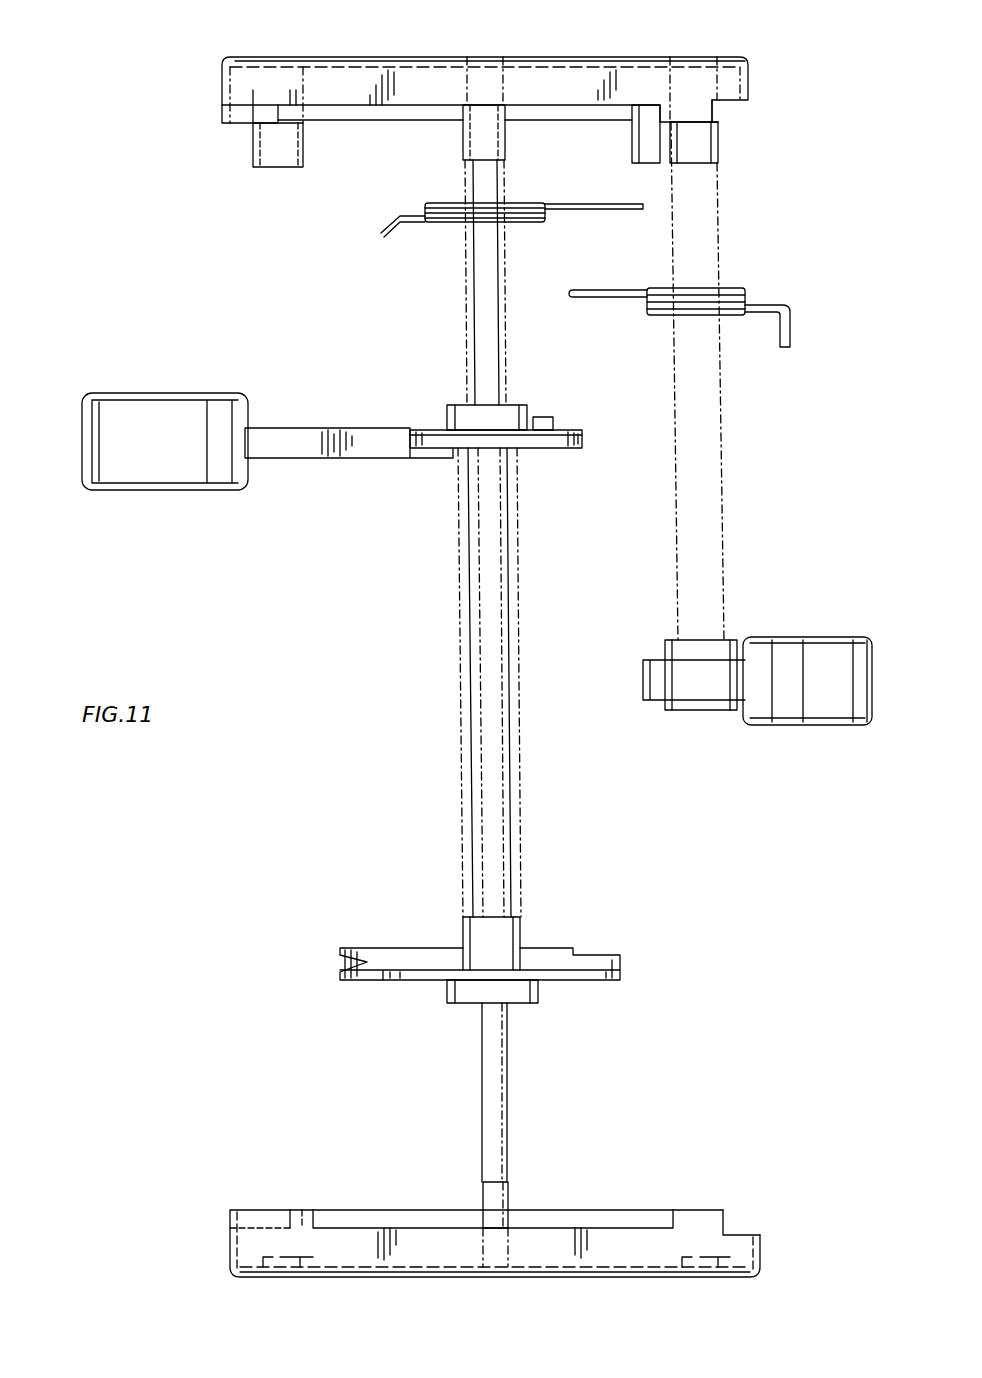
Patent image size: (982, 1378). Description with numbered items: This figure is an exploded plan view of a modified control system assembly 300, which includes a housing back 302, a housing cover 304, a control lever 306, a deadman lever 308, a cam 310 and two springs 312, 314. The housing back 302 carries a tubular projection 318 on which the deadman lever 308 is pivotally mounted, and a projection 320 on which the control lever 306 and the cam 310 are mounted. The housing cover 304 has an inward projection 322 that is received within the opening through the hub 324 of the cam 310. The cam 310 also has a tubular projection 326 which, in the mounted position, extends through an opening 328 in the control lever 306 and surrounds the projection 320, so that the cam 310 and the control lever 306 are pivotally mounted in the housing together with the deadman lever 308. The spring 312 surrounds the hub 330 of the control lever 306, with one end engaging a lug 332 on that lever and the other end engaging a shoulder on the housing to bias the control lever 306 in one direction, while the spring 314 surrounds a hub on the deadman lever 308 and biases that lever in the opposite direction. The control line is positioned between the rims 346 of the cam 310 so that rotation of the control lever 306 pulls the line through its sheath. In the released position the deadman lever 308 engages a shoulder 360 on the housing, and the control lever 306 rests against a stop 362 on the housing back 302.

The control system assembly 300 is at (127, 142).
The housing back 302 is at (485, 112).
The housing cover 304 is at (230, 1214).
The control lever 306 is at (290, 426).
The deadman lever 308 is at (830, 637).
The cam 310 is at (460, 1004).
The spring 312 is at (398, 223).
The spring 314 is at (792, 322).
The tubular projection 318 is at (720, 150).
The projection 320 is at (460, 126).
The inward projection 322 is at (510, 1192).
The hub 324 is at (540, 995).
The tubular projection 326 is at (522, 945).
The opening 328 is at (508, 402).
The hub 330 is at (447, 416).
The lug 332 is at (555, 421).
The rims 346 is at (342, 950).
The shoulder 360 is at (720, 110).
The stop 362 is at (631, 137).